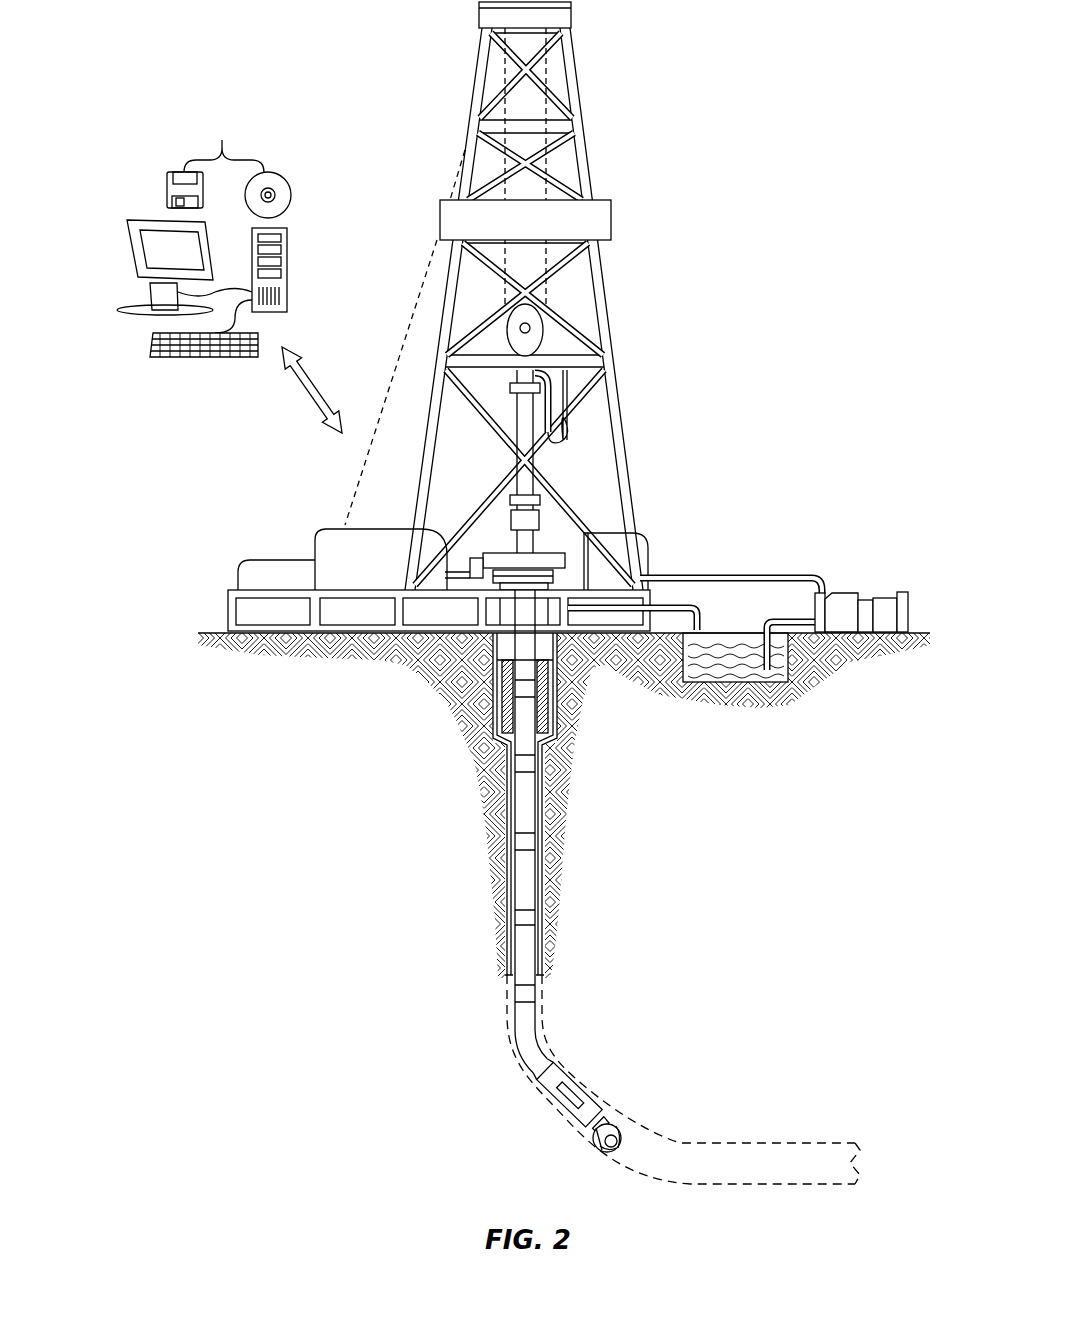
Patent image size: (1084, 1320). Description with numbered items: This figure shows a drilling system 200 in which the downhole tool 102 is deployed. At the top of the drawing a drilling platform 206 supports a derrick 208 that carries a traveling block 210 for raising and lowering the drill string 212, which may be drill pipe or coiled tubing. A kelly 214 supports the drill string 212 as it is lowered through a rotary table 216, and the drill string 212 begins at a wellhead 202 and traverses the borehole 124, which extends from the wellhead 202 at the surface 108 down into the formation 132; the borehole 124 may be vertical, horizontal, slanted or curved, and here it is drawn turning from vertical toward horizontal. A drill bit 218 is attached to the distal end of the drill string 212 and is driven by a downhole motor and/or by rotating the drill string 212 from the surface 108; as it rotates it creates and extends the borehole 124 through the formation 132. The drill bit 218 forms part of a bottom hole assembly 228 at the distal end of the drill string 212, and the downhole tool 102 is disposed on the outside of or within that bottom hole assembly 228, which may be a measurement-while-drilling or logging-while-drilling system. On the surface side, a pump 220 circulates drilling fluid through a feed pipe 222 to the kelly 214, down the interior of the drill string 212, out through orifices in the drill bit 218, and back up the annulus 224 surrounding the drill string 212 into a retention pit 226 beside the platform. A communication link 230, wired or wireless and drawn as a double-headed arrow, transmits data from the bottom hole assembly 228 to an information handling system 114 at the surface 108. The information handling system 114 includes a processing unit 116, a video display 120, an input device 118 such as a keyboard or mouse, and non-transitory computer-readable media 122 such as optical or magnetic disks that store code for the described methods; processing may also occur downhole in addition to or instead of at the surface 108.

The drilling system 200 is at (840, 95).
The derrick 208 is at (585, 143).
The traveling block 210 is at (545, 330).
The kelly 214 is at (527, 410).
The rotary table 216 is at (560, 556).
The wellhead 202 is at (568, 580).
The drilling platform 206 is at (228, 612).
The feed pipe 222 is at (766, 574).
The pump 220 is at (843, 592).
The surface 108 is at (925, 631).
The retention pit 226 is at (733, 668).
The annulus 224 is at (506, 836).
The borehole 124 is at (545, 837).
The drill string 212 is at (532, 822).
The formation 132 is at (772, 925).
The downhole tool 102 is at (568, 1110).
The drill bit 218 is at (623, 1130).
The bottom hole assembly 228 is at (535, 1099).
The information handling system 114 is at (136, 161).
The non-transitory computer-readable media 122 is at (229, 164).
The video display 120 is at (132, 258).
The processing unit 116 is at (287, 240).
The input device 118 is at (170, 360).
The communication link 230 is at (308, 392).